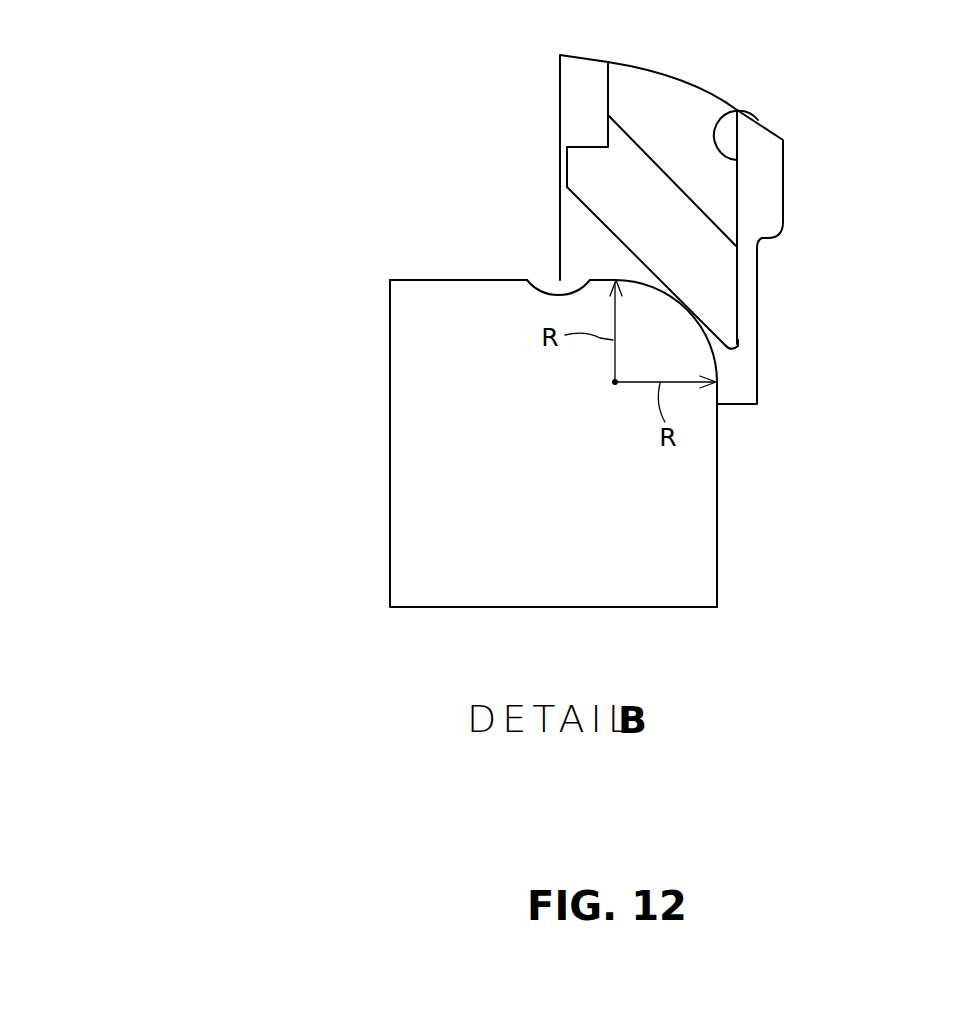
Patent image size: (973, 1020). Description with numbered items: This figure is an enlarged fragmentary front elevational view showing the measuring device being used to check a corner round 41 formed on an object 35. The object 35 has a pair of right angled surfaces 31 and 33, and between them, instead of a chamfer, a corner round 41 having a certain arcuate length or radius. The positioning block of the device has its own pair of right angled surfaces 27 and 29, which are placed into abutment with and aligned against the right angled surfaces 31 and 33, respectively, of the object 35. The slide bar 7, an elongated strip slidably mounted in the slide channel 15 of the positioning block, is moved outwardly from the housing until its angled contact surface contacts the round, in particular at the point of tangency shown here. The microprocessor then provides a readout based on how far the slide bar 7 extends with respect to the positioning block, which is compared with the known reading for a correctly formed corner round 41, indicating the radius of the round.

The slide bar 7 is at (687, 80).
The slide channel 15 is at (760, 117).
The right angled surface 27 is at (526, 279).
The right angled surface 29 is at (716, 388).
The right angled surface 31 is at (435, 280).
The right angled surface 33 is at (717, 467).
The object 35 is at (390, 512).
The corner round 41 is at (687, 308).